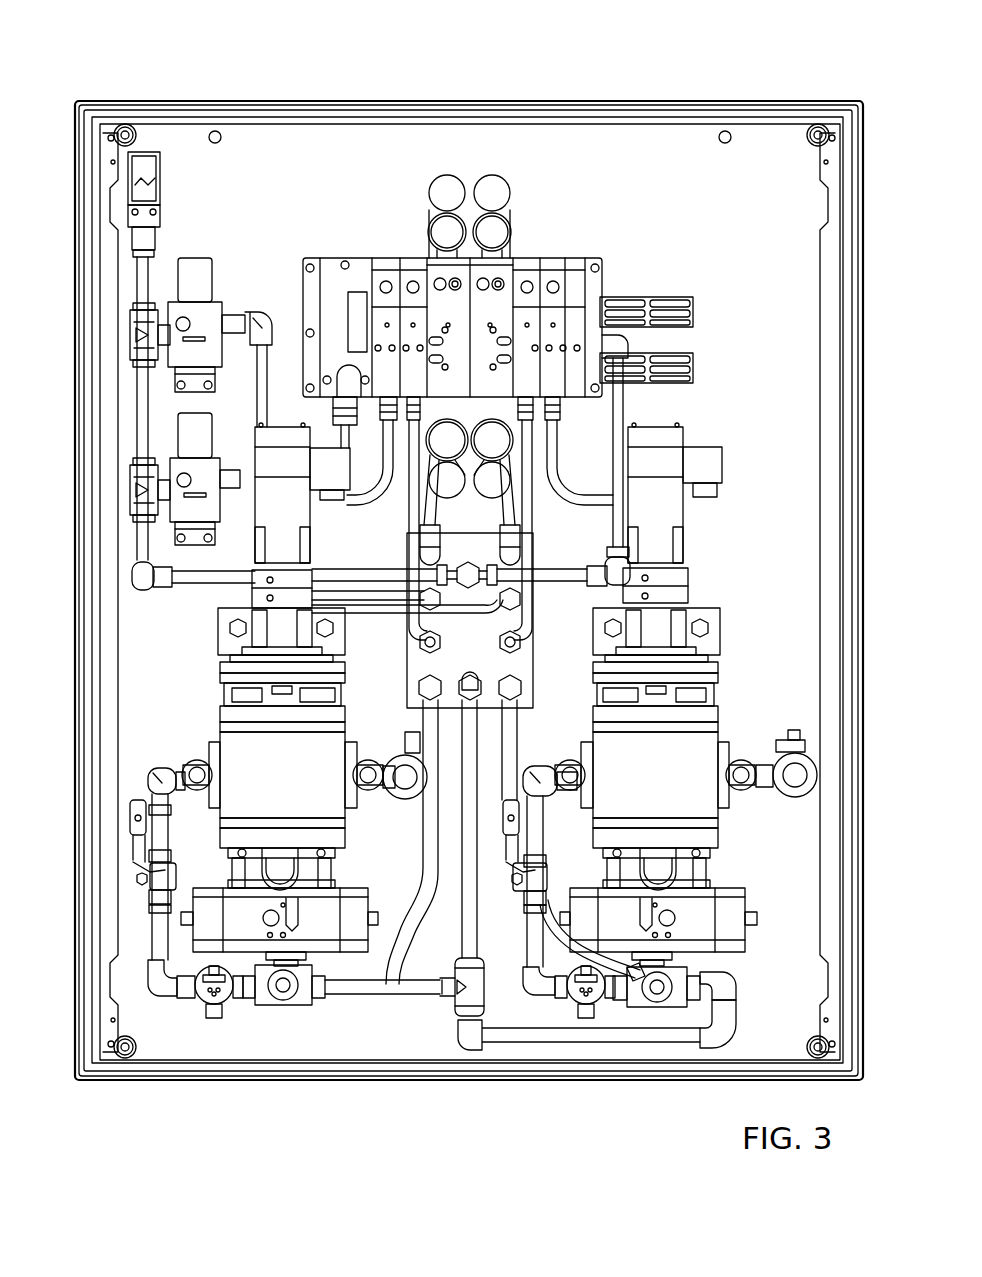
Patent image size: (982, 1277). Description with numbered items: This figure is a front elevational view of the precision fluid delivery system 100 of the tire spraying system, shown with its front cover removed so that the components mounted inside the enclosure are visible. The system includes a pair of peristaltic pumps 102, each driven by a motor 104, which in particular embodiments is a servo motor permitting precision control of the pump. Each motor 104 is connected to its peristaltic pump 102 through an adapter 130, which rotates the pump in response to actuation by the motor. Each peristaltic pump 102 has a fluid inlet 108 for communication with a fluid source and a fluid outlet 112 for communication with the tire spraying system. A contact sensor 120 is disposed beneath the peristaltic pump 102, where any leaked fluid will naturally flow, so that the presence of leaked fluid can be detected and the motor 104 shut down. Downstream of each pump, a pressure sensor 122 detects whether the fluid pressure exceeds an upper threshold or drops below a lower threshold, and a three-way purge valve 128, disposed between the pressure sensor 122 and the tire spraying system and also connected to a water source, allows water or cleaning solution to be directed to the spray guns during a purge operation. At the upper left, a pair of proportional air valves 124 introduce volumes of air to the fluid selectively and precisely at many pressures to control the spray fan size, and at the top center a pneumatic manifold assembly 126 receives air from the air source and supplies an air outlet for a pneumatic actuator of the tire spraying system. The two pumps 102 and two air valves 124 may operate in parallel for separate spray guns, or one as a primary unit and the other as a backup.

The precision fluid delivery system 100 is at (106, 84).
The peristaltic pump 102 is at (205, 736).
The motor 104 is at (245, 523).
The fluid inlet 108 is at (388, 762).
The fluid outlet 112 is at (187, 770).
The contact sensor 120 is at (213, 836).
The pressure sensor 122 is at (227, 1006).
The proportional air valve 124 is at (215, 273).
The pneumatic manifold assembly 126 is at (526, 251).
The three-way purge valve 128 is at (293, 1007).
The adapter 130 is at (250, 597).